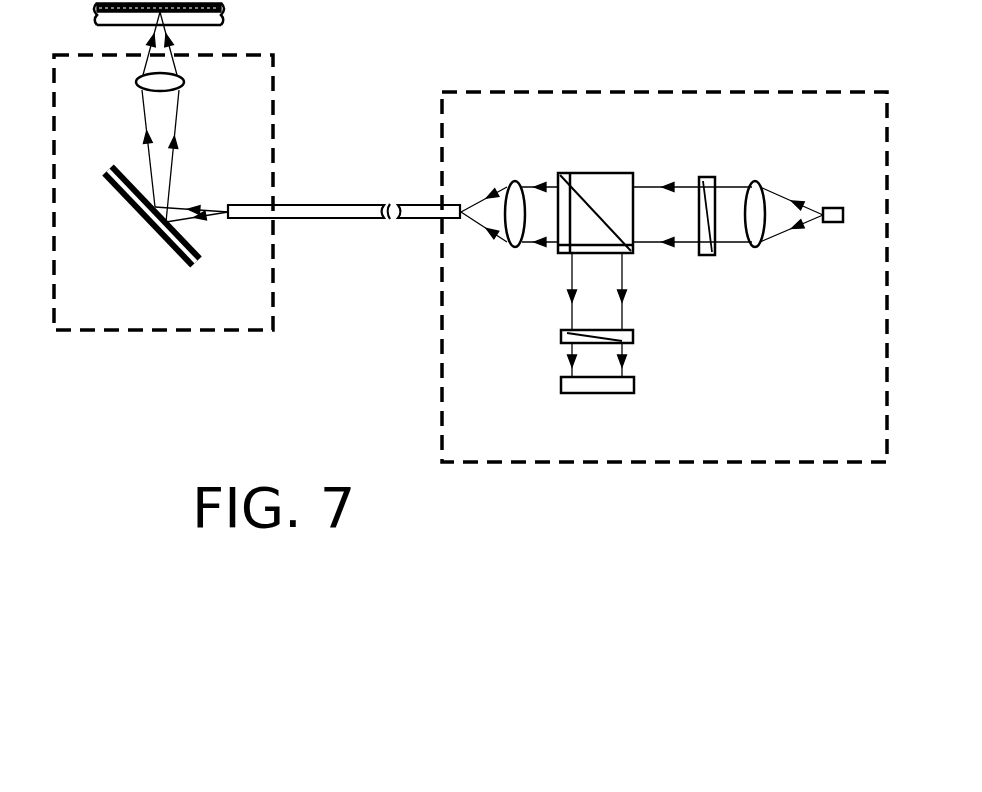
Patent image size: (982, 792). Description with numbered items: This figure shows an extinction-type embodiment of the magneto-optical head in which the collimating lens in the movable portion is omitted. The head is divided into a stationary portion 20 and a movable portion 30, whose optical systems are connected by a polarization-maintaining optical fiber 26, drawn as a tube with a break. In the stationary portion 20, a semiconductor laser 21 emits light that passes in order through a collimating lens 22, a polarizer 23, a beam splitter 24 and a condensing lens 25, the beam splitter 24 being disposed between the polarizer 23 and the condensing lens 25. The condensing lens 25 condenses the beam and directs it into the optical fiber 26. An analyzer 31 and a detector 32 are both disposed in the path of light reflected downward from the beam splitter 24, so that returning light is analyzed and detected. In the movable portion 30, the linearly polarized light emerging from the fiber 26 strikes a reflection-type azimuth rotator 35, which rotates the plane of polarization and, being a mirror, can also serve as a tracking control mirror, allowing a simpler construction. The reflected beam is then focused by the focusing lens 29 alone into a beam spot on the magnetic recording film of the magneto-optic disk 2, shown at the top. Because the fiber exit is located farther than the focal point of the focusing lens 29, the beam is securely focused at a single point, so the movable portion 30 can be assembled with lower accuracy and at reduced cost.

The magneto-optic disk 2 is at (244, 1).
The stationary portion 20 is at (515, 465).
The semiconductor laser 21 is at (838, 207).
The collimating lens 22 is at (758, 186).
The polarizer 23 is at (704, 177).
The beam splitter 24 is at (601, 173).
The condensing lens 25 is at (513, 181).
The polarization-maintaining optical fiber 26 is at (326, 203).
The focusing lens 29 is at (137, 84).
The movable portion 30 is at (120, 336).
The analyzer 31 is at (633, 337).
The detector 32 is at (634, 385).
The reflection-type azimuth rotator 35 is at (165, 233).